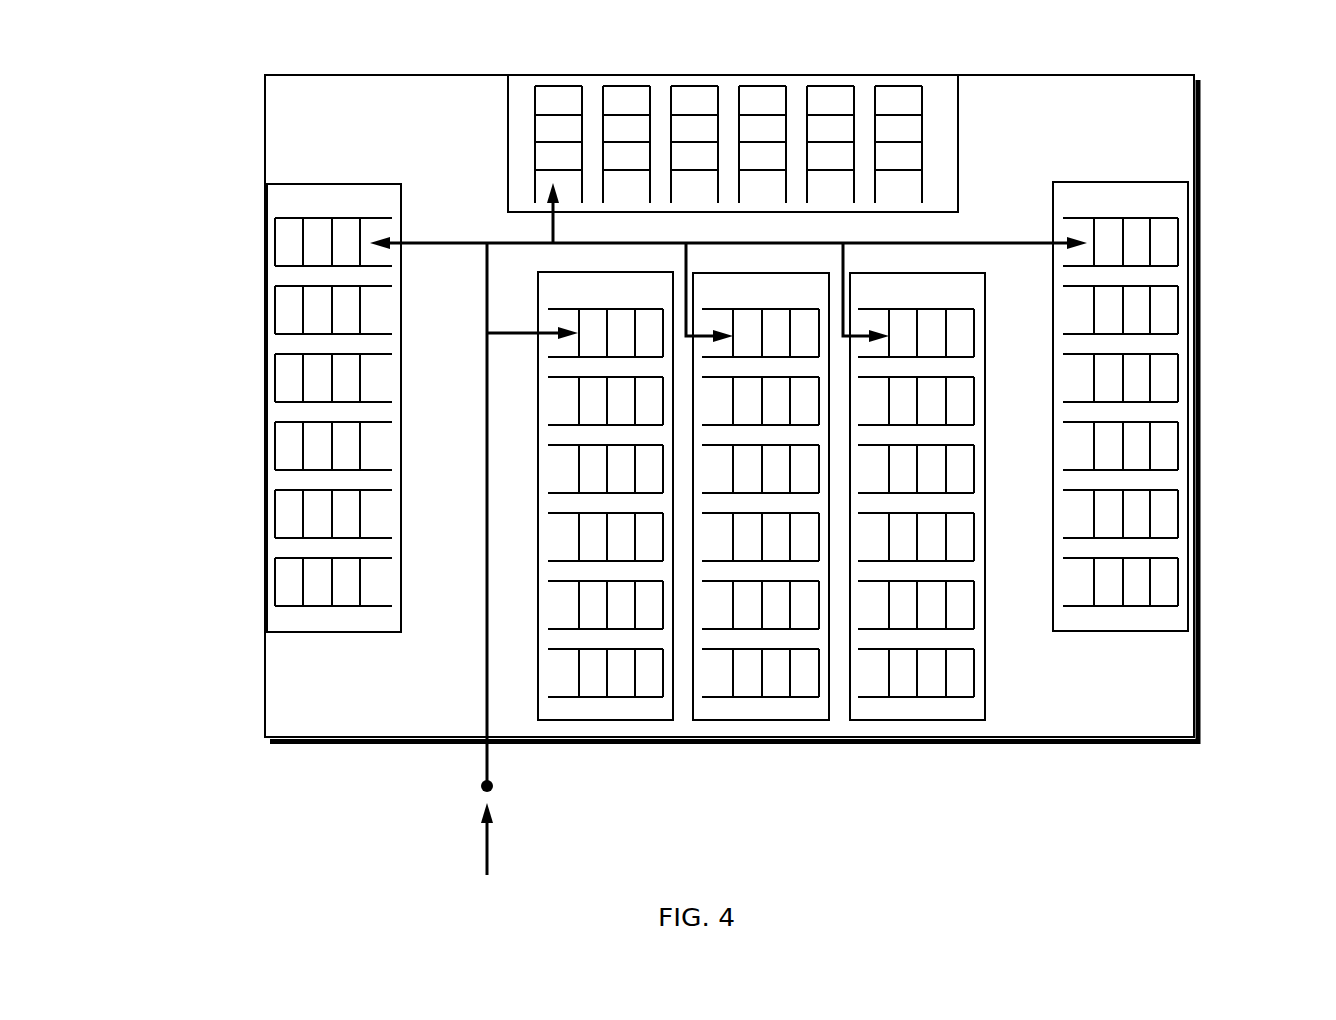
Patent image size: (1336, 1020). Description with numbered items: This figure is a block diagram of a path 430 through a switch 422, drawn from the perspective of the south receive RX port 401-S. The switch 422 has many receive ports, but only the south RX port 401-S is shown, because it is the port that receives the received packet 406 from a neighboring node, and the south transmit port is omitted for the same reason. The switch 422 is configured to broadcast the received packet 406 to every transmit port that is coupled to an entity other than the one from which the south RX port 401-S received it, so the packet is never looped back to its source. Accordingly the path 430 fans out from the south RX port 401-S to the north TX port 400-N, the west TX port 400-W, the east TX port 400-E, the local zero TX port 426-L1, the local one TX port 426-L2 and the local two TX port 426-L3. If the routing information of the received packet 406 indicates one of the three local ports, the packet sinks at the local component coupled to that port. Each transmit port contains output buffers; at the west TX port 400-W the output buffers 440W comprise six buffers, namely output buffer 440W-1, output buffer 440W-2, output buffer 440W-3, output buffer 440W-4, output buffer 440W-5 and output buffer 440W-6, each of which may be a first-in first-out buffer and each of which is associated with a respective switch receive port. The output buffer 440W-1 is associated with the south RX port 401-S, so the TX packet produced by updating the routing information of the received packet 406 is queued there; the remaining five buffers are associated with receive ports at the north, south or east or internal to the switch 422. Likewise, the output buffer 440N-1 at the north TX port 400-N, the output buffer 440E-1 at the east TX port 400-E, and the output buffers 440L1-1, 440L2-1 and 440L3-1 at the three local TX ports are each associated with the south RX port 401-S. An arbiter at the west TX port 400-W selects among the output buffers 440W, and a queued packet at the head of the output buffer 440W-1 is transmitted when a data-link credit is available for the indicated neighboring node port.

The switch 422 is at (1068, 75).
The path 430 is at (487, 665).
The south receive (RX) port 401-S is at (494, 787).
The received packet 406 is at (487, 848).
The west TX port 400-W is at (313, 184).
The output buffers 440W is at (250, 205).
The output buffer 440W-1 is at (248, 244).
The output buffer 440W-2 is at (248, 312).
The output buffer 440W-3 is at (248, 380).
The output buffer 440W-4 is at (248, 448).
The output buffer 440W-5 is at (248, 516).
The output buffer 440W-6 is at (248, 584).
The north transmit (TX) port 400-N is at (789, 114).
The output buffer 440N-1 is at (582, 60).
The east TX port 400-E is at (1180, 427).
The output buffer 440E-1 is at (1200, 222).
The local 0 TX port 426-L1 is at (563, 272).
The output buffer 440L1-1 is at (518, 348).
The local 1 TX port 426-L2 is at (708, 273).
The output buffer 440L2-1 is at (688, 380).
The local 2 TX port 426-L3 is at (921, 273).
The output buffer 440L3-1 is at (995, 320).